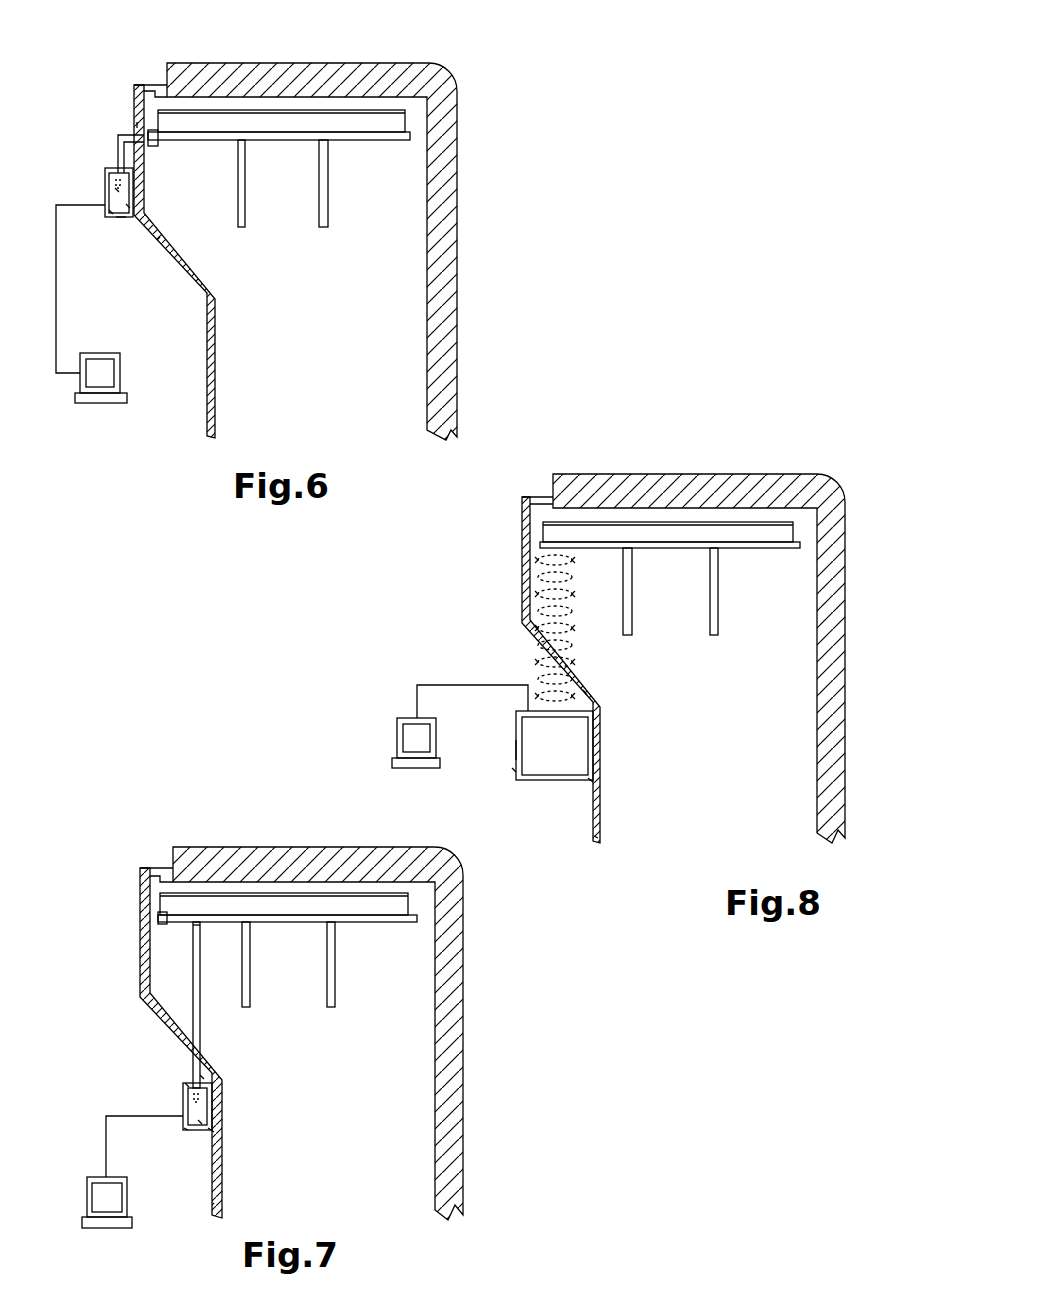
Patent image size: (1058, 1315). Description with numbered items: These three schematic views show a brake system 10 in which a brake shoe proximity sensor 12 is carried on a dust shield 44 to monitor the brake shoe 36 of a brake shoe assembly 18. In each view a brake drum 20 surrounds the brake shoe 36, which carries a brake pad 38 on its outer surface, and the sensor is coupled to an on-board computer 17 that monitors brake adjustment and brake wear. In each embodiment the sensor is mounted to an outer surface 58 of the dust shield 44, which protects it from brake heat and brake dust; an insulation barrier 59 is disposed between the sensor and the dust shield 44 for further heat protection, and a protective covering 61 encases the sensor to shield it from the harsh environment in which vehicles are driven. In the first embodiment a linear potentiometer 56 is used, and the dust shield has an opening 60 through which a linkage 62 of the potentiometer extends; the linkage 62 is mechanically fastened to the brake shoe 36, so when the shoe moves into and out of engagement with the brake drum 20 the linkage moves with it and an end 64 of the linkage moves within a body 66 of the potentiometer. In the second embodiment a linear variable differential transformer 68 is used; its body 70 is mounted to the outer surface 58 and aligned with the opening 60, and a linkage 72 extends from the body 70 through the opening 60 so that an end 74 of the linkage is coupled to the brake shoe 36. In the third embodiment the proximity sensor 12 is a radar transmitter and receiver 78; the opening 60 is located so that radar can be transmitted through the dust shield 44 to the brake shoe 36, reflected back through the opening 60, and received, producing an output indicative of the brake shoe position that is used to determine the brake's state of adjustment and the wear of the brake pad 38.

In FIG. 6, the brake system 10 is at (308, 30).
In FIG. 7, the brake system 10 is at (274, 810).
In FIG. 8, the brake system 10 is at (674, 433).
In FIG. 6, the brake shoe proximity sensor 12 is at (96, 180).
In FIG. 7, the brake shoe proximity sensor 12 is at (136, 1088).
In FIG. 8, the brake shoe proximity sensor 12 is at (510, 757).
In FIG. 6, the on-board computer 17 is at (127, 379).
In FIG. 7, the on-board computer 17 is at (87, 1193).
In FIG. 8, the on-board computer 17 is at (396, 741).
In FIG. 6, the brake shoe assembly 18 is at (350, 168).
In FIG. 7, the brake shoe assembly 18 is at (358, 972).
In FIG. 8, the brake shoe assembly 18 is at (743, 598).
In FIG. 6, the brake drum 20 is at (362, 74).
In FIG. 7, the brake drum 20 is at (340, 862).
In FIG. 8, the brake drum 20 is at (730, 488).
In FIG. 6, the brake shoe 36 is at (205, 142).
In FIG. 7, the brake shoe 36 is at (362, 923).
In FIG. 8, the brake shoe 36 is at (745, 552).
In FIG. 6, the brake pad 38 is at (392, 122).
In FIG. 7, the brake pad 38 is at (402, 905).
In FIG. 8, the brake pad 38 is at (765, 530).
In FIG. 6, the dust shield 44 is at (207, 368).
In FIG. 7, the dust shield 44 is at (140, 943).
In FIG. 8, the dust shield 44 is at (522, 555).
In FIG. 6, the linear potentiometer 56 is at (109, 218).
In FIG. 6, the outer surface 58 is at (158, 243).
In FIG. 7, the outer surface 58 is at (212, 1207).
In FIG. 8, the outer surface 58 is at (596, 838).
In FIG. 6, the insulation barrier 59 is at (120, 220).
In FIG. 7, the insulation barrier 59 is at (212, 1130).
In FIG. 8, the insulation barrier 59 is at (590, 780).
In FIG. 6, the opening 60 is at (137, 124).
In FIG. 7, the opening 60 is at (200, 1078).
In FIG. 8, the opening 60 is at (585, 693).
In FIG. 6, the protective covering 61 is at (113, 168).
In FIG. 7, the protective covering 61 is at (185, 1085).
In FIG. 8, the protective covering 61 is at (512, 770).
In FIG. 6, the linkage 62 is at (118, 135).
In FIG. 6, the end 64 is at (117, 190).
In FIG. 6, the body 66 is at (127, 205).
In FIG. 7, the linear variable differential transformer 68 is at (185, 1130).
In FIG. 7, the body 70 is at (200, 1122).
In FIG. 7, the linkage 72 is at (193, 990).
In FIG. 7, the end 74 is at (193, 928).
In FIG. 8, the radar transmitter and receiver 78 is at (541, 734).